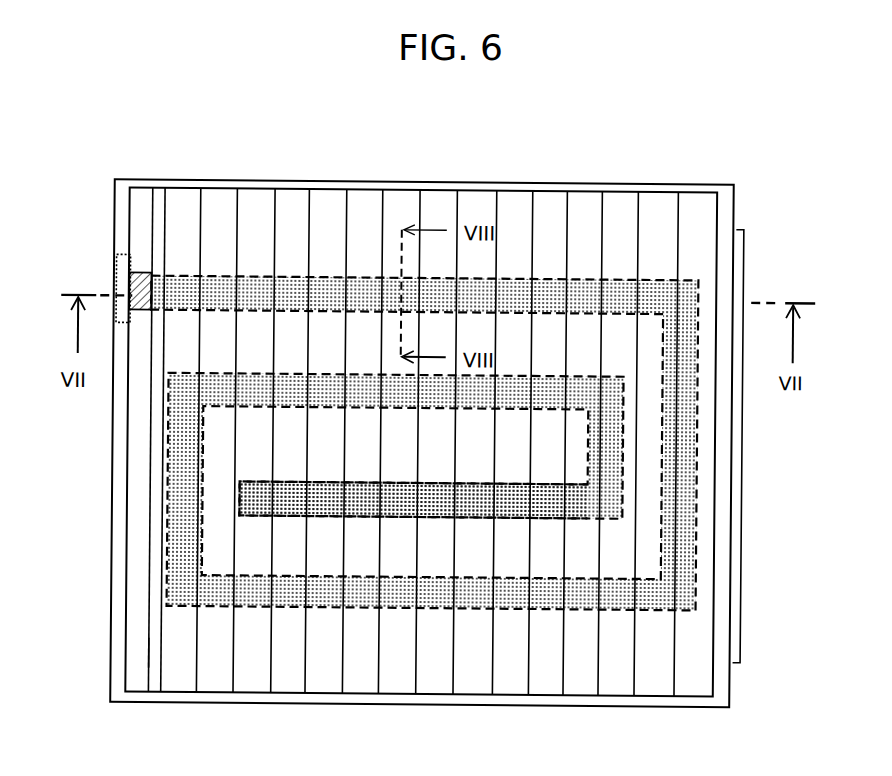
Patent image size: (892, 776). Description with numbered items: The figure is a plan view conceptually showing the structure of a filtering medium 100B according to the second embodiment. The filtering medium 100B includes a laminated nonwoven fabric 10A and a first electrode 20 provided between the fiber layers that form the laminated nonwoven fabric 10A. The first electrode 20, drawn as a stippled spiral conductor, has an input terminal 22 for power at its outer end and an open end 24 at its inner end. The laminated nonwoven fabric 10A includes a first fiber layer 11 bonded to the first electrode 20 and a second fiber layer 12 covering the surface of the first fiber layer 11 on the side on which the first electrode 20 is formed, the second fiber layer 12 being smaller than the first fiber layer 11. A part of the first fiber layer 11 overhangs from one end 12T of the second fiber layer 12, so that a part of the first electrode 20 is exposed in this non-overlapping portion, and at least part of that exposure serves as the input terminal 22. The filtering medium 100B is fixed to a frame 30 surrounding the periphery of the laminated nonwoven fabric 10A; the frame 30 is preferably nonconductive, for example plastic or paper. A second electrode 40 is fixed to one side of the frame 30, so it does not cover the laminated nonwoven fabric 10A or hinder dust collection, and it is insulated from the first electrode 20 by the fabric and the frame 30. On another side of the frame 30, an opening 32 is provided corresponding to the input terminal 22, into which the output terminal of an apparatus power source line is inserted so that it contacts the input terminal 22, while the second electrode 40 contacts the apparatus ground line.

The laminated nonwoven fabric 10A is at (225, 135).
The first fiber layer 11 is at (140, 203).
The second fiber layer 12 is at (180, 205).
The one end of second fiber layer 12T is at (146, 655).
The first electrode 20 is at (657, 280).
The input terminal 22 is at (138, 275).
The open end 24 is at (250, 495).
The frame 30 is at (720, 681).
The opening 32 is at (122, 292).
The second electrode 40 is at (733, 576).
The filtering medium 100B is at (703, 143).